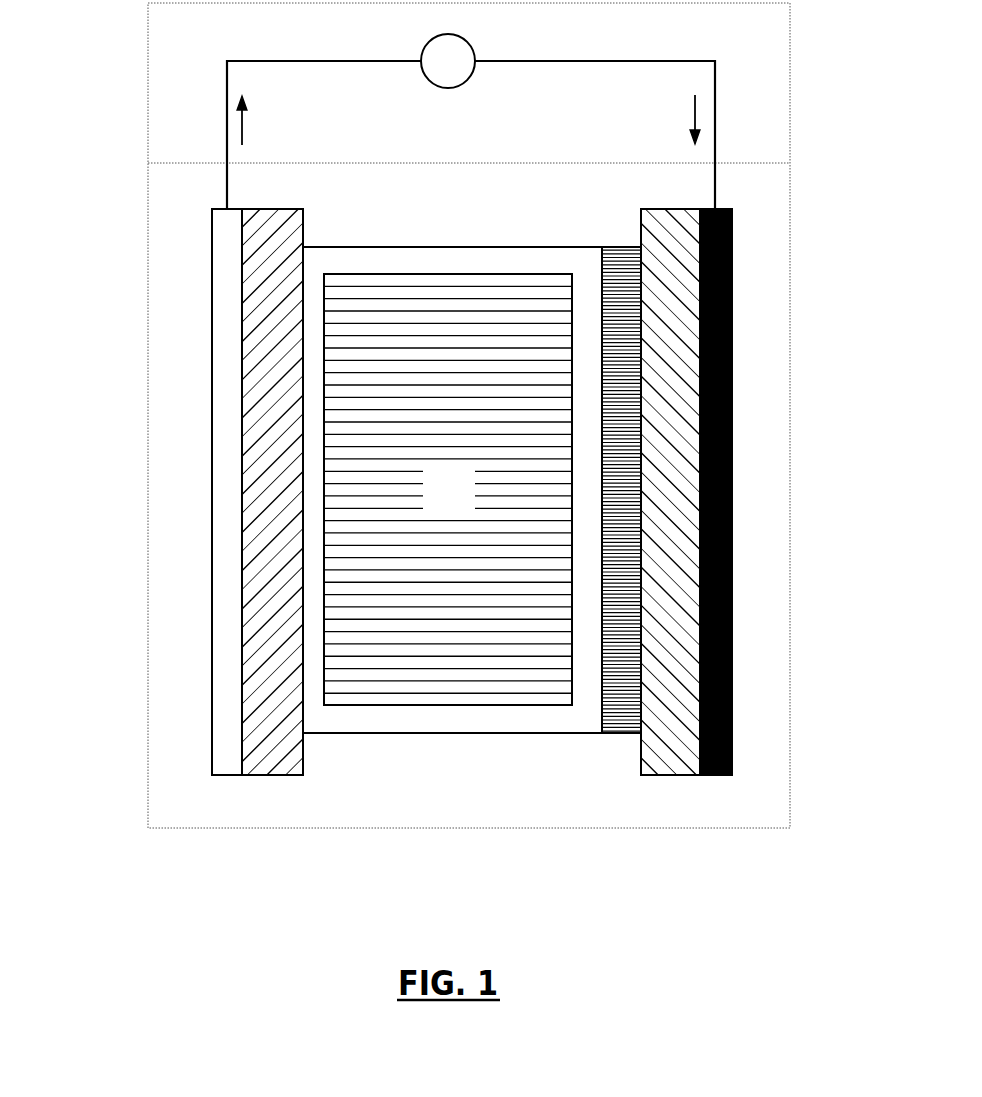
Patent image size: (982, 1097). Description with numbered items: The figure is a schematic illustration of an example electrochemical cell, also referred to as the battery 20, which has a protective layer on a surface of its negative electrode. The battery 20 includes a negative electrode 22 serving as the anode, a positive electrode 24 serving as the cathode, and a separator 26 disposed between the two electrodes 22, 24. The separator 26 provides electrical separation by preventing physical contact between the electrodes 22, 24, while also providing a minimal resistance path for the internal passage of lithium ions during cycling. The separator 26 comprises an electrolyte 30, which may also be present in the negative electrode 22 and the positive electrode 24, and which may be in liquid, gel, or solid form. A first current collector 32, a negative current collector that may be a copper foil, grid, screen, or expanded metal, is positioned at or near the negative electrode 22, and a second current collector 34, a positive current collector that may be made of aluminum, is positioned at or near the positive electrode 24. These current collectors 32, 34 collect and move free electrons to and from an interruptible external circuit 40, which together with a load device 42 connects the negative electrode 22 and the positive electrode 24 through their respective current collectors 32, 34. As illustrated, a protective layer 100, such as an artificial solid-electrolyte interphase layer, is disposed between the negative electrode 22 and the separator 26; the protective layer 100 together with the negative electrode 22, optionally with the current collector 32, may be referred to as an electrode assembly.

The electrochemical cell 20 is at (137, 243).
The negative electrode 22 is at (670, 776).
The positive electrode 24 is at (273, 776).
The separator 26 is at (452, 735).
The electrolyte 30 is at (448, 489).
The first current collector 32 is at (732, 492).
The second current collector 34 is at (212, 492).
The external circuit 40 is at (373, 121).
The load device 42 is at (448, 61).
The protective layer 100 is at (622, 247).